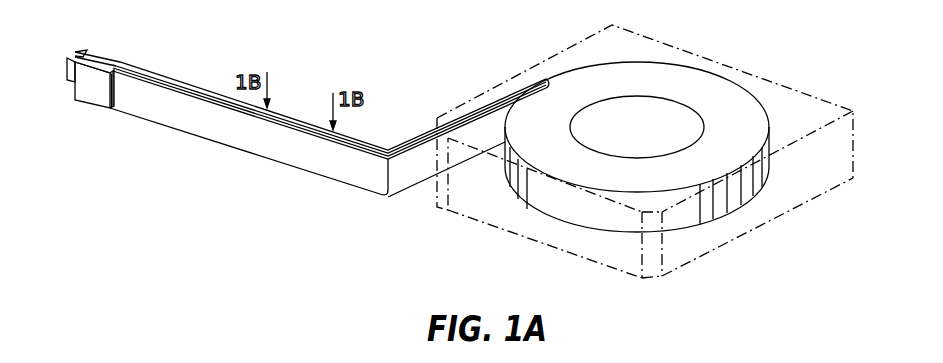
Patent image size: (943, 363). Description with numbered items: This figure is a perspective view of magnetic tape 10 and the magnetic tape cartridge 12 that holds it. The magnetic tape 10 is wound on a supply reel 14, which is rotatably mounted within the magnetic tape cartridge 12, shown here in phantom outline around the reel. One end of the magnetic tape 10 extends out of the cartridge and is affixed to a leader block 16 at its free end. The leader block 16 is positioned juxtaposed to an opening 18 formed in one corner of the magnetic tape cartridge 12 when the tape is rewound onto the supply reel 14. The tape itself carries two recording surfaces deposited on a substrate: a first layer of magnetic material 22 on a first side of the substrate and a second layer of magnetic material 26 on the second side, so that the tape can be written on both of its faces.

The magnetic tape 10 is at (260, 143).
The magnetic tape cartridge 12 is at (827, 102).
The supply reel 14 is at (727, 82).
The leader block 16 is at (105, 57).
The opening 18 is at (445, 183).
The first layer of magnetic material 22 is at (167, 90).
The second layer of magnetic material 26 is at (175, 82).